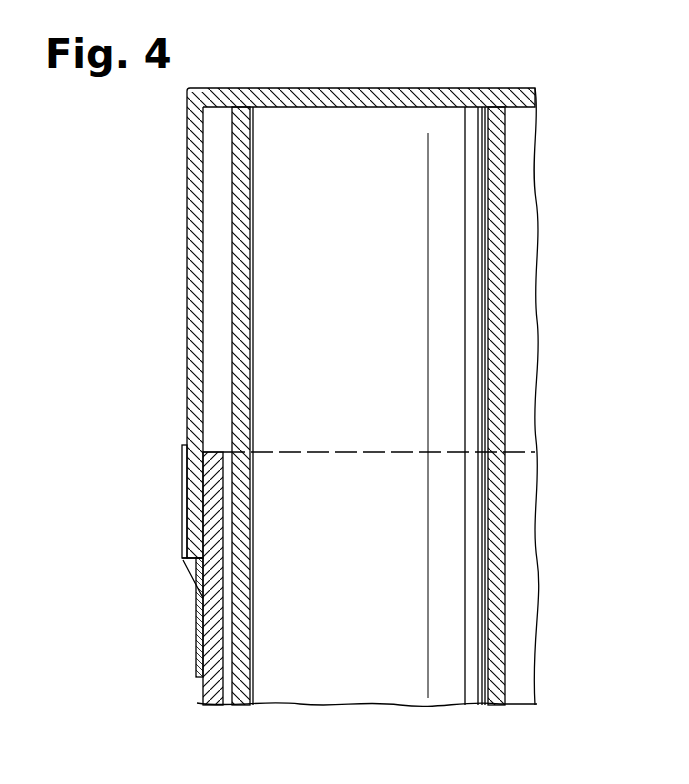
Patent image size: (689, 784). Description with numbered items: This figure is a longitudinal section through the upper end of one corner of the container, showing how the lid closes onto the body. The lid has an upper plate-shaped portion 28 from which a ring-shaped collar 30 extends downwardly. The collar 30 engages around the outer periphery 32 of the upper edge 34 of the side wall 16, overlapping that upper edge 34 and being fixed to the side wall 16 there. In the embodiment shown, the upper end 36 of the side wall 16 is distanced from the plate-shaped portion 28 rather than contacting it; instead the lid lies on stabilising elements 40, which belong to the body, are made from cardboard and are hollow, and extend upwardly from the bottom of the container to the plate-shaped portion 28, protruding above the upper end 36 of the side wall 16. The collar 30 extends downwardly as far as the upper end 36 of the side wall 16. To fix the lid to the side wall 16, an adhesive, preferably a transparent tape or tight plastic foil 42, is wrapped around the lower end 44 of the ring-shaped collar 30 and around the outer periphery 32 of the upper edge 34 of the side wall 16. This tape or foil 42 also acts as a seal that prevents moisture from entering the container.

The side wall 16 is at (210, 703).
The plate-shaped portion 28 is at (395, 88).
The ring-shaped collar 30 is at (187, 223).
The outer periphery 32 is at (200, 570).
The upper edge 34 is at (213, 497).
The upper end 36 is at (208, 452).
The stabilising elements 40 is at (240, 318).
The adhesive tape or foil 42 is at (181, 540).
The lower end 44 is at (183, 507).